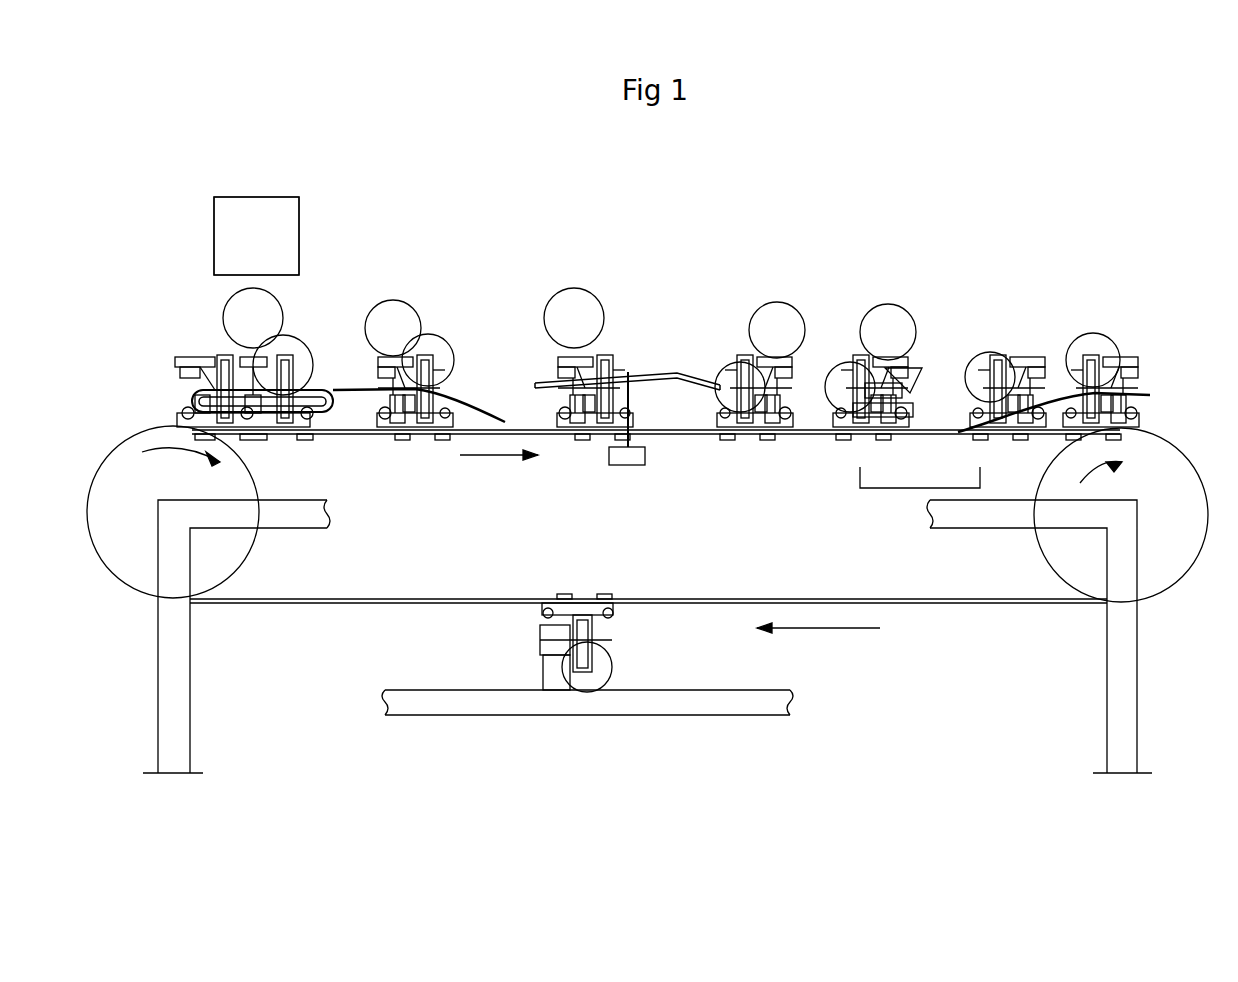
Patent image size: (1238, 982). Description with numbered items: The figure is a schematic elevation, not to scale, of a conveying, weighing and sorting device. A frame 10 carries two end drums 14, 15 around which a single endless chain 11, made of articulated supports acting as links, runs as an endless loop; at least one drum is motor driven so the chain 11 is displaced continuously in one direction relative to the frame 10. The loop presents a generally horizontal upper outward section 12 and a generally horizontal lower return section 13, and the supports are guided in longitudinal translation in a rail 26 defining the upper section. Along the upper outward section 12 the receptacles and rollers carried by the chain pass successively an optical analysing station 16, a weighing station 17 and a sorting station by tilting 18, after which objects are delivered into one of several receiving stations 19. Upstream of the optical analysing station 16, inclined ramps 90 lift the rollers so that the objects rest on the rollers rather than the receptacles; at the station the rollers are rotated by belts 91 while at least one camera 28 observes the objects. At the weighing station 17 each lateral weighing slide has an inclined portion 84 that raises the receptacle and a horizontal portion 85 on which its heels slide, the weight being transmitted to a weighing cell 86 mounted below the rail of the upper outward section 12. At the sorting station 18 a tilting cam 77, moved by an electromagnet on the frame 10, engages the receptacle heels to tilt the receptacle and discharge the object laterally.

The frame 10 is at (1117, 713).
The endless chain 11 is at (1010, 266).
The upper outward section 12 is at (663, 448).
The lower return section 13 is at (733, 590).
The end drum 14 is at (130, 513).
The end drum 15 is at (1157, 538).
The optical analysing station 16 is at (224, 185).
The weighing station 17 is at (585, 272).
The sorting station 18 is at (930, 280).
The receiving station 19 is at (892, 489).
The rail 26 is at (347, 607).
The camera 28 is at (262, 225).
The tilting cam 77 is at (912, 378).
The inclined portion 84 is at (540, 380).
The horizontal portion 85 is at (635, 360).
The weighing cell 86 is at (613, 466).
The inclined ramp 90 is at (1057, 397).
The belt 91 is at (192, 395).